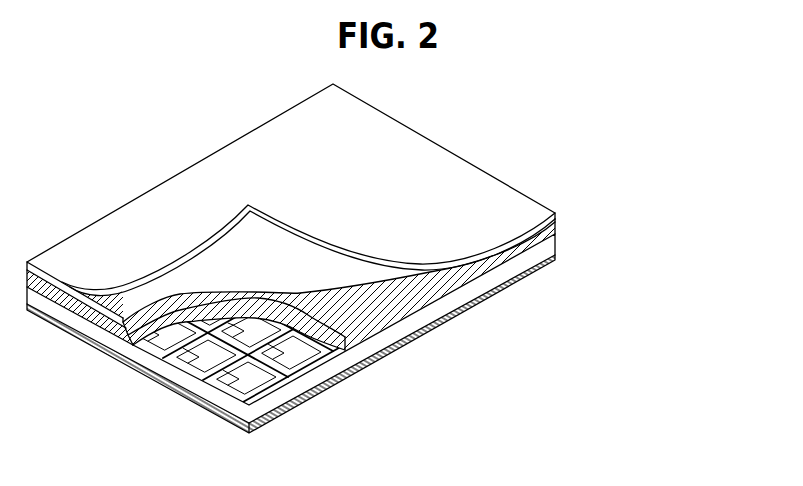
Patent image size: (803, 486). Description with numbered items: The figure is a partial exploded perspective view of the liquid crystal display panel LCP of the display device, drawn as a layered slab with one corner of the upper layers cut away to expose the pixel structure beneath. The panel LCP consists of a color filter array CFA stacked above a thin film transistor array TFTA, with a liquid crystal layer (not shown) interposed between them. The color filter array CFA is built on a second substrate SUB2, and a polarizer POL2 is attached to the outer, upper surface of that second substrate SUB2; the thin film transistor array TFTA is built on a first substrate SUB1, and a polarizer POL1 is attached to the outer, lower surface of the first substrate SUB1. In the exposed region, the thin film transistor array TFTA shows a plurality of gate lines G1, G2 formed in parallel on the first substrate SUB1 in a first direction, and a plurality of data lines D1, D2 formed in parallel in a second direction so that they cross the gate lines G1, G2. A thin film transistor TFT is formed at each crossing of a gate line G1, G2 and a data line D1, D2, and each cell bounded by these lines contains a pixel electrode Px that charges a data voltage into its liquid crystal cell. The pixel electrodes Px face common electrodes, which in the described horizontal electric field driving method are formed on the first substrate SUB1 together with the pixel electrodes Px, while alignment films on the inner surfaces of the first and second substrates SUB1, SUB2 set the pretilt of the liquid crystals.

The polarizer POL2 is at (557, 213).
The second substrate SUB2 is at (557, 223).
The first substrate SUB1 is at (557, 242).
The polarizer POL1 is at (557, 259).
The color filter array CFA is at (358, 217).
The thin film transistor array TFTA is at (362, 333).
The liquid crystal display panel LCP is at (388, 258).
The thin film transistor TFT is at (154, 367).
The data line D1 is at (203, 383).
The data line D2 is at (165, 366).
The pixel electrode Px is at (232, 387).
The gate line G1 is at (294, 383).
The gate line G2 is at (339, 361).